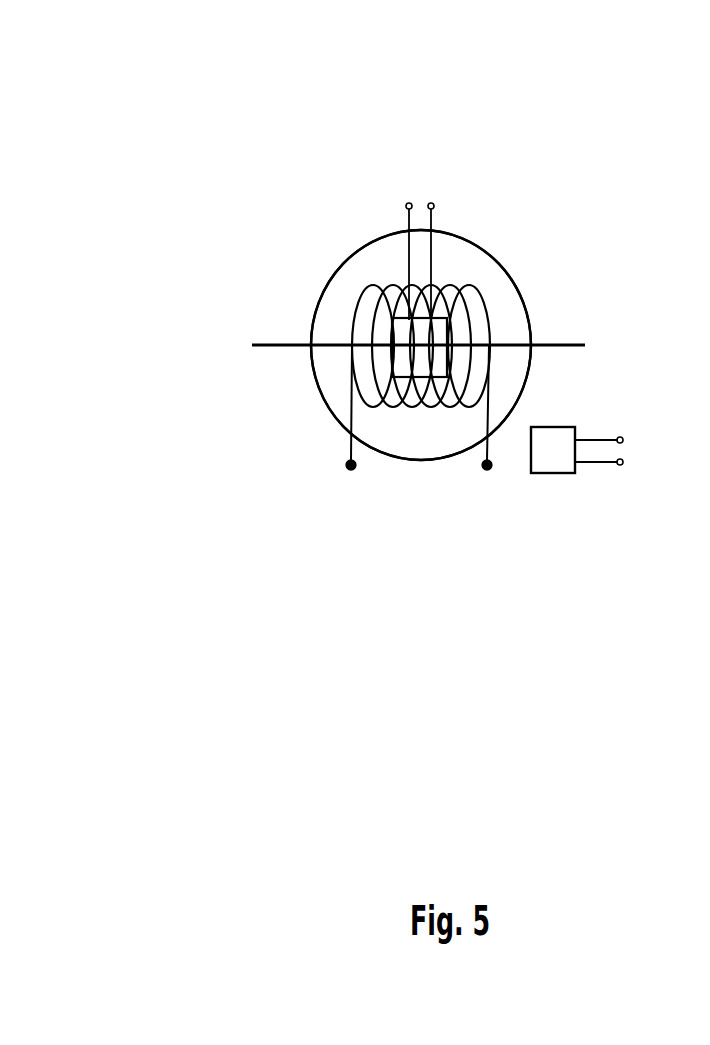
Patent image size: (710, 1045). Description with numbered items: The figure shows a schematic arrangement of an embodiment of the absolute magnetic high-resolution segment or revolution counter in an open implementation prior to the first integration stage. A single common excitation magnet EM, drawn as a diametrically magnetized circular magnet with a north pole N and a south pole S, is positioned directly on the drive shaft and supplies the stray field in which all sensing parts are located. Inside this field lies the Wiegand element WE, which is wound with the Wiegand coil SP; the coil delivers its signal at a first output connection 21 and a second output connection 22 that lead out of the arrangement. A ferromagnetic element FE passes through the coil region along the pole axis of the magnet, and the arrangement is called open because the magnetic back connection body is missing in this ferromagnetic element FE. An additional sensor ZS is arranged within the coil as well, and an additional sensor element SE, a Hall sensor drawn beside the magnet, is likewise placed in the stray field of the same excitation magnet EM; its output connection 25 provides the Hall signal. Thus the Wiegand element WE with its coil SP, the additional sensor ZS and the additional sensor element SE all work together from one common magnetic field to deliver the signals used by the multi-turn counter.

The Wiegand element WE is at (350, 274).
The excitation magnet EM is at (338, 316).
The north pole N is at (331, 368).
The south pole S is at (514, 328).
The ferromagnetic element FE is at (525, 350).
The Wiegand coil SP is at (462, 320).
The additional sensor ZS is at (428, 330).
The output-connection of coil 21 is at (352, 428).
The output-connection of coil 22 is at (490, 428).
The additional sensor element SE is at (552, 450).
The output-connection of Hall sensor 25 is at (617, 453).